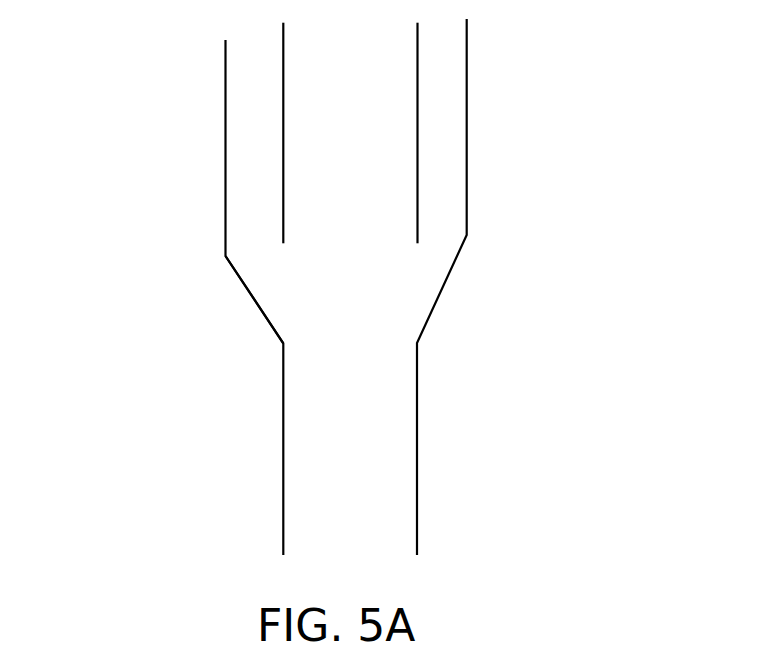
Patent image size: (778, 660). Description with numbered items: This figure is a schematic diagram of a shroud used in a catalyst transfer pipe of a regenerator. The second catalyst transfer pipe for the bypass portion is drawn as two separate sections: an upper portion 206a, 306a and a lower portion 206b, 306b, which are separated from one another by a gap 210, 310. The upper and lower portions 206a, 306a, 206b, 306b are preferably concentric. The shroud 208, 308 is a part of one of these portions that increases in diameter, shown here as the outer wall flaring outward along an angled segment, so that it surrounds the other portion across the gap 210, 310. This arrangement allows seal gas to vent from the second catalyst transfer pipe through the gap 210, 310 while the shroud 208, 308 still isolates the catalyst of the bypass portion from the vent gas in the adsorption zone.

The shroud 208 is at (159, 297).
The shroud 308 is at (226, 127).
The upper portion 206a is at (487, 133).
The upper portion 306a is at (418, 143).
The lower portion 206b is at (554, 287).
The lower portion 306b is at (418, 423).
The gap 210 is at (180, 299).
The gap 310 is at (295, 280).